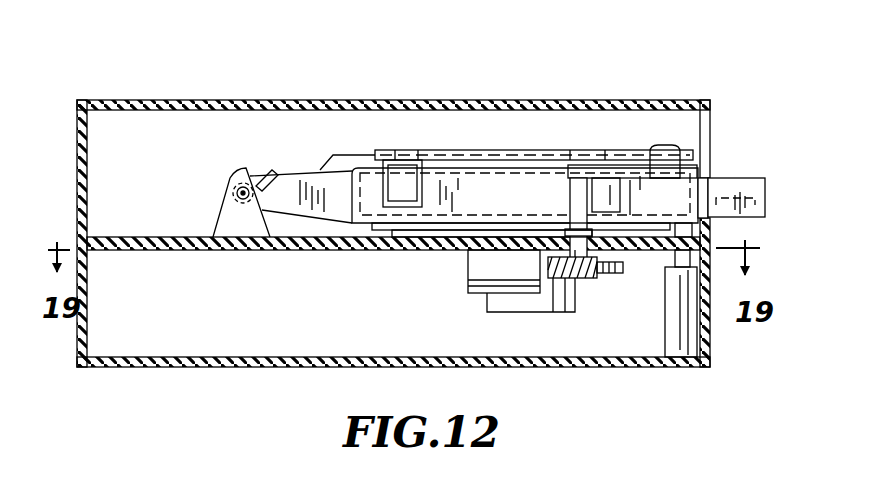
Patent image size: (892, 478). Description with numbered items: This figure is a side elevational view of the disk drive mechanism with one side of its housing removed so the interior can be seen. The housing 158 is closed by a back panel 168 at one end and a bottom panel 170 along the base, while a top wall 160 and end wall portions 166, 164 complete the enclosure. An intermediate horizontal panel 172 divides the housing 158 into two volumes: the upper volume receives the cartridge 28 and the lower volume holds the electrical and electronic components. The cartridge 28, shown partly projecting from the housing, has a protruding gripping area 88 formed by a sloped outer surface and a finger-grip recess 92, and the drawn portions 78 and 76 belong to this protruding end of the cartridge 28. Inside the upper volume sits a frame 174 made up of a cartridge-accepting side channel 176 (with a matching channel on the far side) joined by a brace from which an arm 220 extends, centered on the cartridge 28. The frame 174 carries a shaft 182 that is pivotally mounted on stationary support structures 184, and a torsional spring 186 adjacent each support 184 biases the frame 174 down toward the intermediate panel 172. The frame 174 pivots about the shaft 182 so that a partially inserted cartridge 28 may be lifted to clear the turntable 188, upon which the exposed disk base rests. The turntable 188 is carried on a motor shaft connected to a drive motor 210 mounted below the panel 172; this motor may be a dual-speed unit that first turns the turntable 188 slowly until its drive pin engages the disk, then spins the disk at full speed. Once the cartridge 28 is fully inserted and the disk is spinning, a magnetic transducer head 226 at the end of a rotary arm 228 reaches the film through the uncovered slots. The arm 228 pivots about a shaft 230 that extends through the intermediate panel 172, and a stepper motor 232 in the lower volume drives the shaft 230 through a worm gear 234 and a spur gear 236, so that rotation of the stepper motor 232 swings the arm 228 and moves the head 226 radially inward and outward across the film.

The cartridge 28 is at (751, 192).
The drive connector 76 is at (766, 204).
The connector block 78 is at (766, 185).
The protruding gripping area 88 is at (742, 176).
The finger-grip recess 92 is at (755, 215).
The housing 158 is at (414, 232).
The top wall 160 is at (548, 100).
The right side wall lower portion 164 is at (710, 350).
The right side wall upper portion 166 is at (710, 128).
The back panel 168 is at (77, 118).
The bottom panel 170 is at (141, 368).
The intermediate horizontal panel 172 is at (152, 251).
The frame 174 is at (297, 166).
The cartridge-accepting side channel 176 is at (372, 238).
The shaft 182 is at (238, 184).
The stationary support structure 184 is at (222, 216).
The torsional spring 186 is at (269, 170).
The turntable 188 is at (437, 231).
The drive motor 210 is at (534, 305).
The arm 220 is at (350, 156).
The magnetic transducer head 226 is at (403, 172).
The rotary arm 228 is at (582, 152).
The shaft 230 is at (570, 190).
The stepper motor 232 is at (468, 288).
The worm gear 234 is at (580, 280).
The spur gear 236 is at (617, 274).